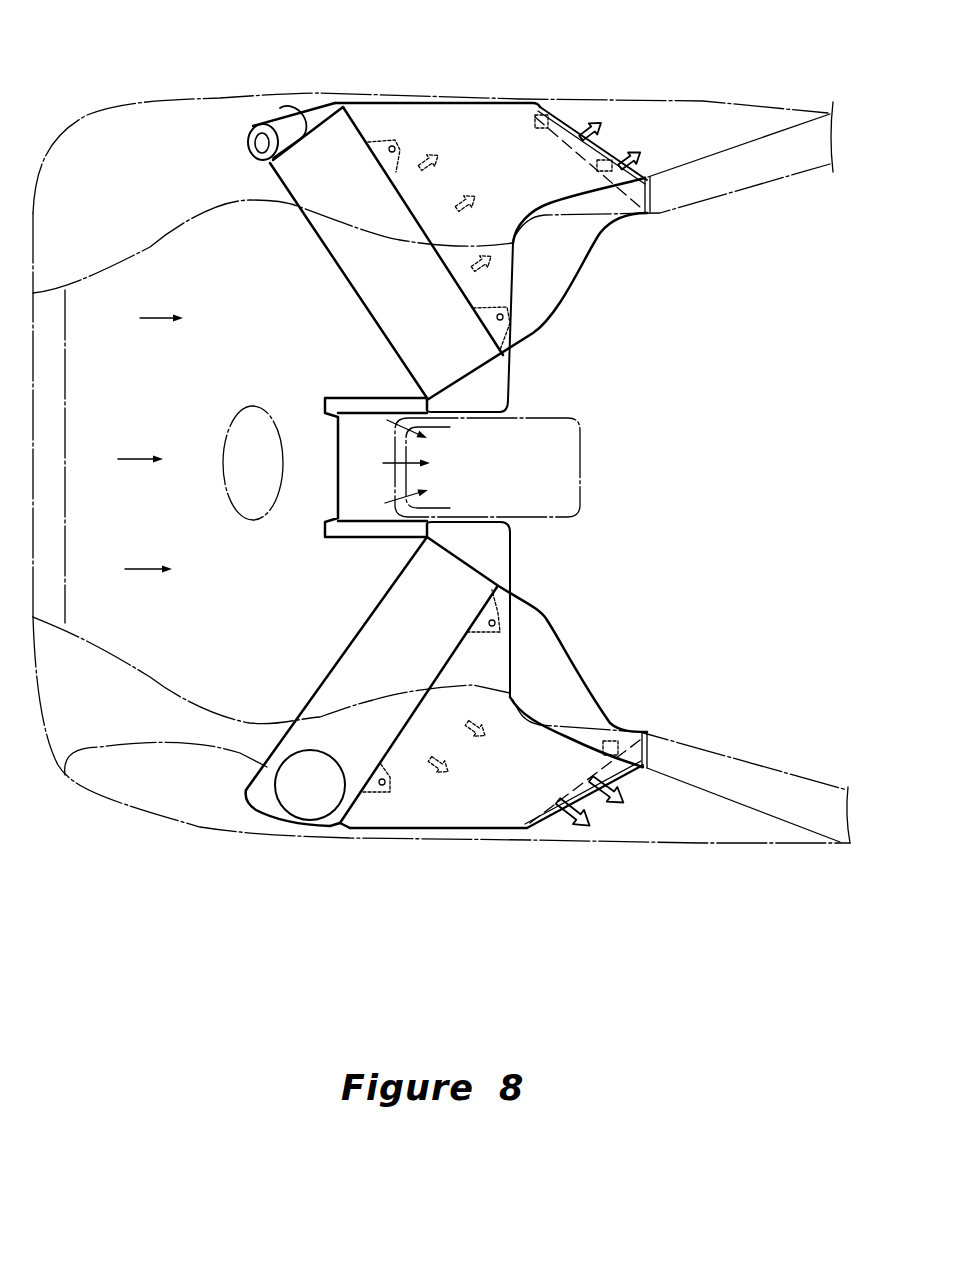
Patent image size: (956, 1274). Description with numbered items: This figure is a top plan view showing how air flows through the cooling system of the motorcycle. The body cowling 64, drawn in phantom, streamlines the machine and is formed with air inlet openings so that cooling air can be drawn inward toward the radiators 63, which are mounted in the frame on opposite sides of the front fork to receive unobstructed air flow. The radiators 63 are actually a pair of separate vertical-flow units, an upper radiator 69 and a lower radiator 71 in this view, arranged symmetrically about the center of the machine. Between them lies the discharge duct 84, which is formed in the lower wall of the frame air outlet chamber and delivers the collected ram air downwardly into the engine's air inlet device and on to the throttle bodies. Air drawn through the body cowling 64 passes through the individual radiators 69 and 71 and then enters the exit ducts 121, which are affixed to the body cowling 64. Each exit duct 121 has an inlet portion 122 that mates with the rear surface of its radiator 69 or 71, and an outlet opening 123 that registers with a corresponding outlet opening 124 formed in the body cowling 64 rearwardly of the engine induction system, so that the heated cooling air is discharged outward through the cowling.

The radiators 63 is at (301, 294).
The body cowling 64 is at (197, 97).
The radiator 69 is at (313, 230).
The radiator 71 is at (372, 612).
The discharge duct 84 is at (570, 420).
The exit ducts 121 is at (580, 263).
The inlet portions 122 is at (372, 117).
The outlet openings 123 is at (535, 117).
The outlet openings 124 is at (560, 130).